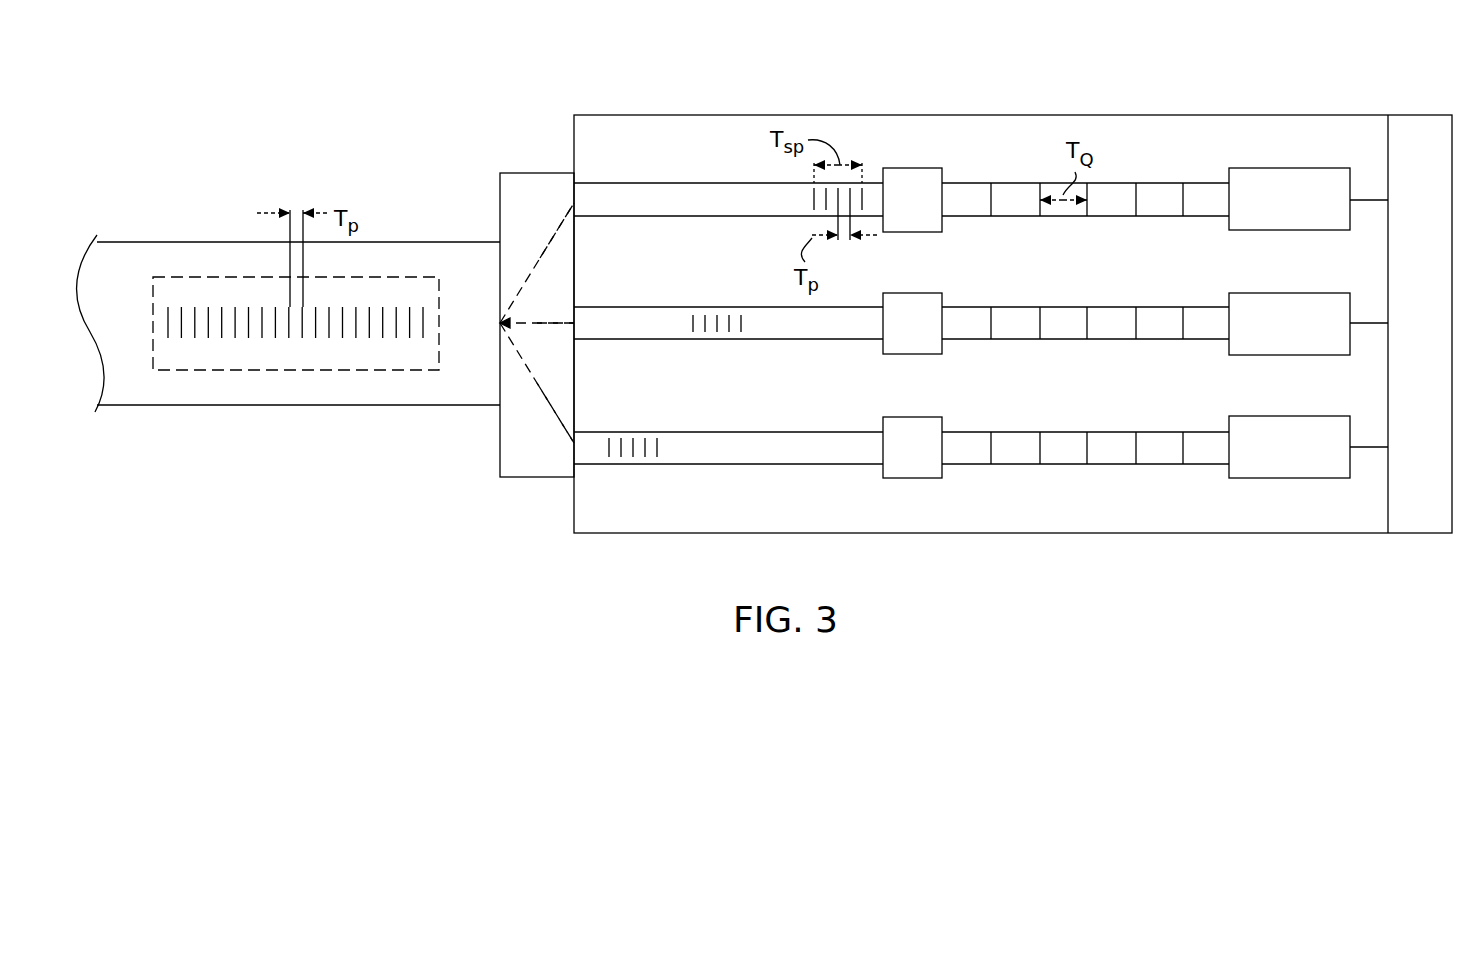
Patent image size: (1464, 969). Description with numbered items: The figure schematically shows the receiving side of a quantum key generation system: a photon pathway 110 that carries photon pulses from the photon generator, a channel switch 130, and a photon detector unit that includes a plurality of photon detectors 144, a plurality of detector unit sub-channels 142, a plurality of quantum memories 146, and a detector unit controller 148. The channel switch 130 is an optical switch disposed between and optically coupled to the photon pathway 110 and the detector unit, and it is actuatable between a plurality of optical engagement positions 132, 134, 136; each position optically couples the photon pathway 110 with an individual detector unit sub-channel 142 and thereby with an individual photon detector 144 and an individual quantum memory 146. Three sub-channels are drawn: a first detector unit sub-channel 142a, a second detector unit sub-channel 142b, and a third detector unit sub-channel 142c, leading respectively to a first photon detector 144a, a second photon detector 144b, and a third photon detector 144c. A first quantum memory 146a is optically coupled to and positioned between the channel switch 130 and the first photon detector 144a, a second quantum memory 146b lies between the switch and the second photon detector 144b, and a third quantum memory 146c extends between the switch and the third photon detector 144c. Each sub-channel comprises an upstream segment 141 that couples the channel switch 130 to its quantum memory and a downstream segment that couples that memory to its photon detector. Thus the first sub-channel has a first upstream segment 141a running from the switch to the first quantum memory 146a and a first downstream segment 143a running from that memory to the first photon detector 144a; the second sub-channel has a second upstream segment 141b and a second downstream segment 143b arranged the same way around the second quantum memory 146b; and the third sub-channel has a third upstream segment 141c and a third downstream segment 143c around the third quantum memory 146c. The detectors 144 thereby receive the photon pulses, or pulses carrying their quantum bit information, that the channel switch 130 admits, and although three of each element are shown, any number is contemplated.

The photon pathway 110 is at (132, 242).
The channel switch 130 is at (518, 172).
The optical engagement position 132 is at (555, 232).
The optical engagement position 134 is at (538, 322).
The optical engagement position 136 is at (560, 410).
The upstream segment 141 is at (901, 295).
The first upstream segment 141a is at (728, 216).
The second upstream segment 141b is at (728, 340).
The third upstream segment 141c is at (728, 464).
The detector unit sub-channels 142 is at (1093, 303).
The first detector unit sub-channel 142a is at (1070, 202).
The second detector unit sub-channel 142b is at (1070, 325).
The third detector unit sub-channel 142c is at (1071, 451).
The first downstream segment 143a is at (1103, 216).
The second downstream segment 143b is at (1103, 340).
The third downstream segment 143c is at (1103, 465).
The photon detectors 144 is at (1296, 275).
The first photon detector 144a is at (1250, 168).
The second photon detector 144b is at (1250, 293).
The third photon detector 144c is at (1250, 416).
The quantum memories 146 is at (905, 273).
The first quantum memory 146a is at (912, 168).
The second quantum memory 146b is at (912, 293).
The third quantum memory 146c is at (915, 417).
The detector unit controller 148 is at (1420, 135).